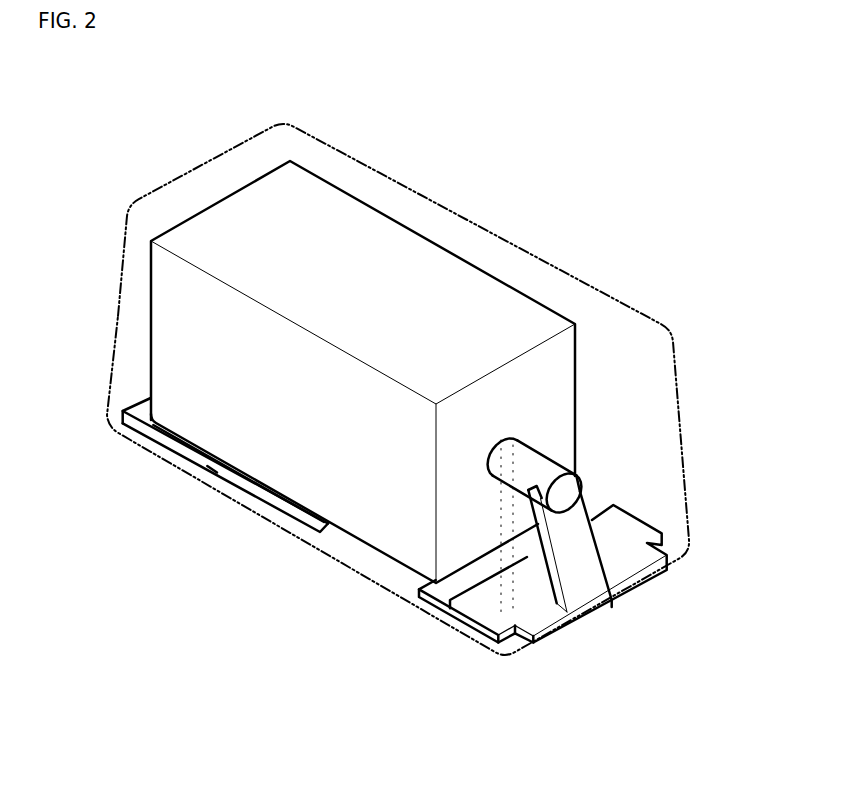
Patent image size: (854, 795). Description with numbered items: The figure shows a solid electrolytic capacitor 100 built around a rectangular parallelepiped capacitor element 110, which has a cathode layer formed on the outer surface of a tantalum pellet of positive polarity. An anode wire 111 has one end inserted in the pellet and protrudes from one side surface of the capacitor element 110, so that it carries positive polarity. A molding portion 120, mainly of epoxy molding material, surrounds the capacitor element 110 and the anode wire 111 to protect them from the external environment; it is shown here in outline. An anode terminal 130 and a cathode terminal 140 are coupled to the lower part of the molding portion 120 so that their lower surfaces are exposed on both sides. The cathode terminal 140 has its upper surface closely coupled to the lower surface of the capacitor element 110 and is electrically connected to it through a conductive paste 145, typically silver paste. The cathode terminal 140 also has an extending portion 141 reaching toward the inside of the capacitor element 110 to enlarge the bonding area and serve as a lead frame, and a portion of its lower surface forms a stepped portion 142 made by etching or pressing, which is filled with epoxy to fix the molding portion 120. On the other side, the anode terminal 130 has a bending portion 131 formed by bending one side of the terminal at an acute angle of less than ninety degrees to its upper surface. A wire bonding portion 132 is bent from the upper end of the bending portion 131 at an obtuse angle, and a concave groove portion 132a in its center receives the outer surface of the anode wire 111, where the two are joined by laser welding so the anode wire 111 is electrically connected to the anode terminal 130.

The solid electrolytic capacitor 100 is at (79, 76).
The capacitor element 110 is at (363, 364).
The anode wire 111 is at (624, 429).
The molding portion 120 is at (398, 389).
The anode terminal 130 is at (519, 586).
The bending portion 131 is at (612, 597).
The wire bonding portion 132 is at (630, 551).
The groove portion 132a is at (640, 463).
The cathode terminal 140 is at (181, 461).
The extending portion 141 is at (225, 514).
The stepped portion 142 is at (197, 517).
The conductive paste 145 is at (216, 478).